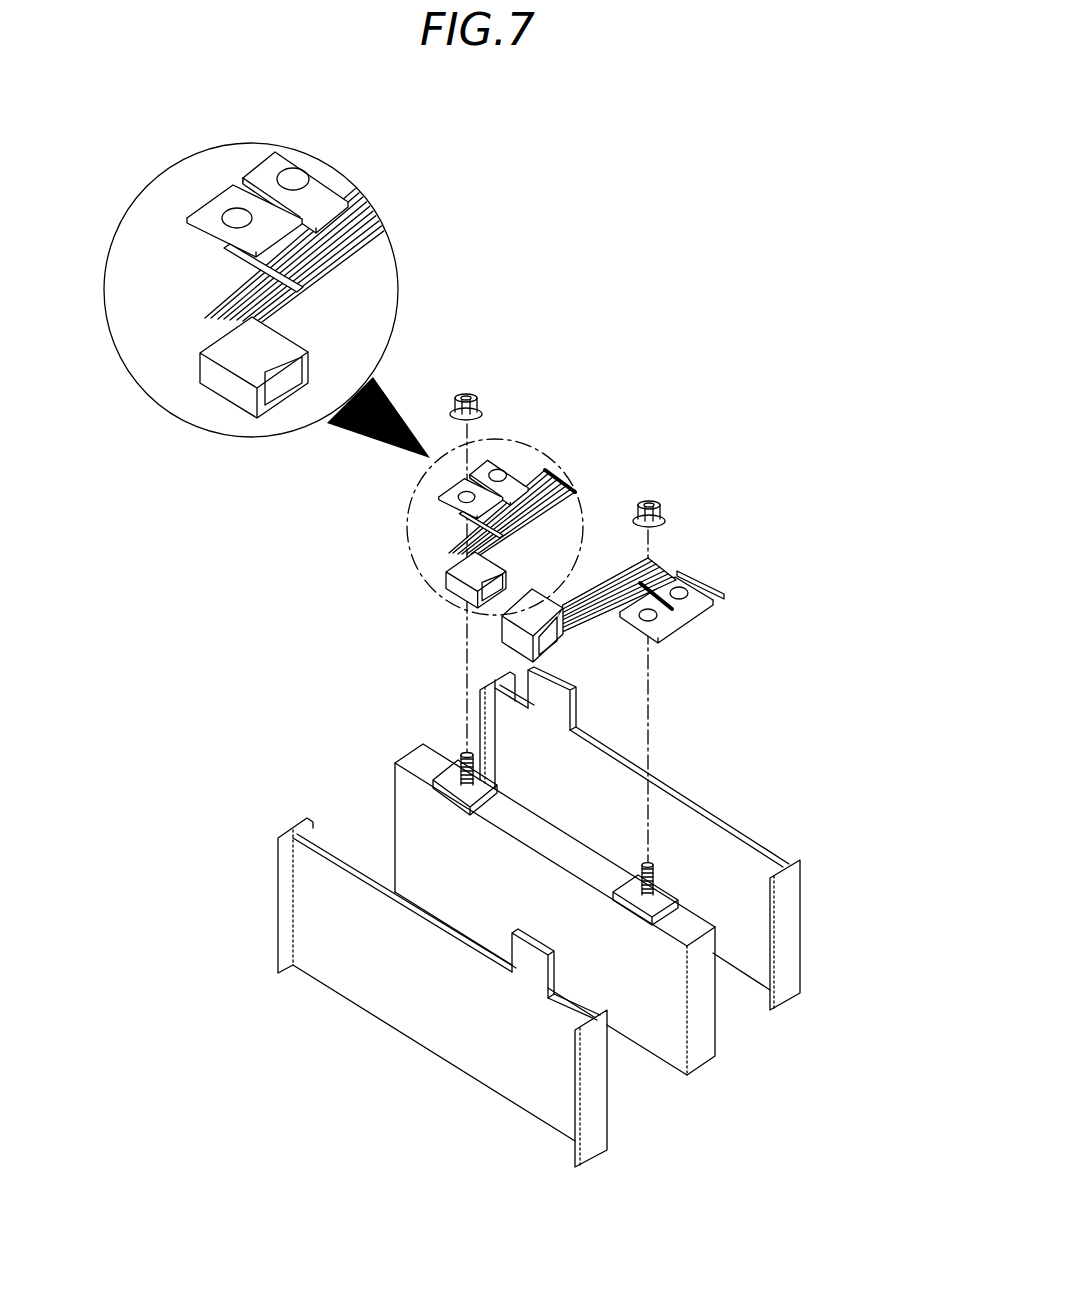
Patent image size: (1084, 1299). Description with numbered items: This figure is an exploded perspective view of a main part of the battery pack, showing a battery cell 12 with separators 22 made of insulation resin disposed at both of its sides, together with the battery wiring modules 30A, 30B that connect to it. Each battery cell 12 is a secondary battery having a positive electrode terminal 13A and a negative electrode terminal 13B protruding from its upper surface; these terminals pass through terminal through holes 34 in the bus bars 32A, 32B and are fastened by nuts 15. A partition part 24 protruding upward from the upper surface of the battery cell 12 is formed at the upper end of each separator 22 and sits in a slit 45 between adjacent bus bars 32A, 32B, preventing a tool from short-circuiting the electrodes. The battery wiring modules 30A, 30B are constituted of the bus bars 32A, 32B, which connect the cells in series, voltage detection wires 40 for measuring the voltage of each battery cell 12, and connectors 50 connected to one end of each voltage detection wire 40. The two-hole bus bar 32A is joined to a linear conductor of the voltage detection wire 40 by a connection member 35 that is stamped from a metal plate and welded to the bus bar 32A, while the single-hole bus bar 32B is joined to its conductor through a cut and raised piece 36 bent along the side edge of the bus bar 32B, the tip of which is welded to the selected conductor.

The battery cell 12 is at (707, 1018).
The positive electrode terminal 13A is at (463, 752).
The negative electrode terminal 13B is at (655, 862).
The nut 15 is at (470, 392).
The separator 22 is at (788, 907).
The partition part 24 is at (568, 685).
The battery wiring module 30A is at (352, 278).
The battery wiring module 30B is at (630, 560).
The bus bar 32A is at (318, 172).
The bus bar 32B is at (197, 230).
The terminal through hole 34 is at (236, 208).
The connection member 35 is at (556, 478).
The cut and raised piece 36 is at (245, 270).
The voltage detection wire 40 is at (365, 253).
The slit 45 is at (262, 185).
The connector 50 is at (220, 353).